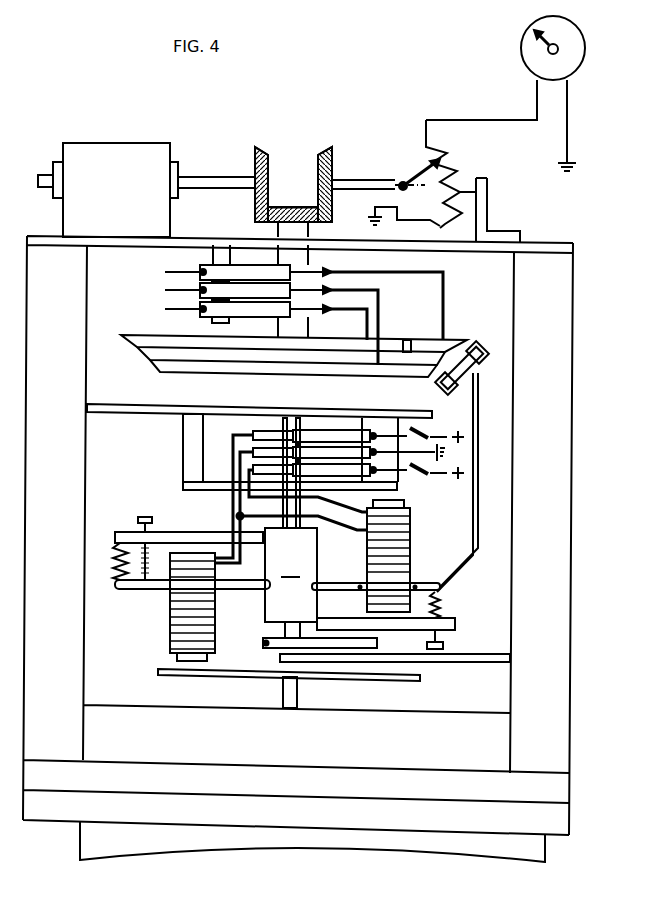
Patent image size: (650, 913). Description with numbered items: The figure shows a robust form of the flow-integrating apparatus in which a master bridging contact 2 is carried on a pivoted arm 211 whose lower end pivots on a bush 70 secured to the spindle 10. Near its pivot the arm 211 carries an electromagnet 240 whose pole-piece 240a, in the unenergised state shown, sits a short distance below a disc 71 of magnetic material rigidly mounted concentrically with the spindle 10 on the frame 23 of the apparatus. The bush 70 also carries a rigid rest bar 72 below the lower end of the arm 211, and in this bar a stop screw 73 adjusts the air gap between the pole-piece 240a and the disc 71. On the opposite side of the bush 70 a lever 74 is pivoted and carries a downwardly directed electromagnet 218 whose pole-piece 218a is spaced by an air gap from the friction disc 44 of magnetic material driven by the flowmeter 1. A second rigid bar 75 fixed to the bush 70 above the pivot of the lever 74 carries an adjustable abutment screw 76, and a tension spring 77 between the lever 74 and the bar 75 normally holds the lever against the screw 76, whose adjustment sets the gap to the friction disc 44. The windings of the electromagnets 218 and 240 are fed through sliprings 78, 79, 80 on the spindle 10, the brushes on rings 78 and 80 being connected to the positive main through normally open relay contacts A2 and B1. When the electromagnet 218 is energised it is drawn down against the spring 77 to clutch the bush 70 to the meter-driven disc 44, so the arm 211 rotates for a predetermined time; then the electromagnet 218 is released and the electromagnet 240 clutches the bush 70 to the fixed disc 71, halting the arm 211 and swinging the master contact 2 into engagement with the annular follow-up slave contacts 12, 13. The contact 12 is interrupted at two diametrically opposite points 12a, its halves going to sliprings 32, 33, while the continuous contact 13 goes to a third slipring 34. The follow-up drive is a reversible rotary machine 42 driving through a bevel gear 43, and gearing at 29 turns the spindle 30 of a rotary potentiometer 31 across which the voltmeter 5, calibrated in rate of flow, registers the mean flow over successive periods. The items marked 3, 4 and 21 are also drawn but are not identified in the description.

The flowmeter 1 is at (402, 858).
The master bridging contact 2 is at (478, 366).
The support post 3 is at (297, 696).
The plate assembly 4 is at (277, 358).
The voltmeter 5 is at (520, 51).
The spindle 10 is at (314, 474).
The annular follow-up contact 12 is at (121, 340).
The diametrically opposite points 12a is at (407, 340).
The continuous follow-up contact 13 is at (142, 363).
The bar 21 is at (262, 643).
The frame 23 is at (508, 668).
The gearing 29 is at (316, 205).
The spindle of rotary potentiometer 30 is at (362, 182).
The rotary potentiometer 31 is at (460, 172).
The slipring 32 is at (326, 273).
The slipring 33 is at (350, 290).
The third slipring 34 is at (328, 310).
The reversible rotary machine 42 is at (118, 196).
The bevel gear 43 is at (268, 152).
The friction disc 44 is at (376, 677).
The bush 70 is at (291, 575).
The disc of magnetic material 71 is at (224, 491).
The rigid rest bar 72 is at (455, 624).
The stop screw 73 is at (442, 605).
The lever 74 is at (236, 590).
The second rigid bar 75 is at (186, 536).
The adjustable abutment screw 76 is at (150, 512).
The tension spring 77 is at (114, 558).
The slipring 78 is at (260, 430).
The slipring 79 is at (250, 436).
The slipring 80 is at (249, 471).
The pivoted arm 211 is at (481, 496).
The electromagnet 218 is at (167, 602).
The pole-piece 218a is at (180, 658).
The electromagnet 240 is at (416, 556).
The pole-piece 240a is at (406, 505).
The relay contact A2 is at (430, 431).
The relay contact B1 is at (428, 476).